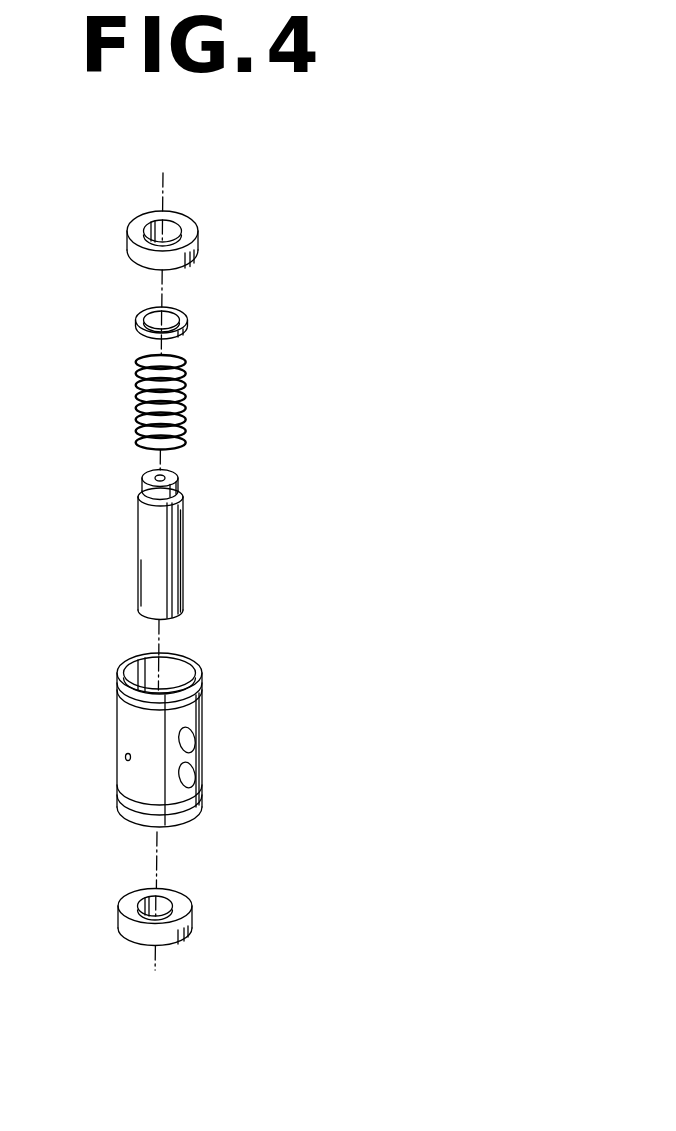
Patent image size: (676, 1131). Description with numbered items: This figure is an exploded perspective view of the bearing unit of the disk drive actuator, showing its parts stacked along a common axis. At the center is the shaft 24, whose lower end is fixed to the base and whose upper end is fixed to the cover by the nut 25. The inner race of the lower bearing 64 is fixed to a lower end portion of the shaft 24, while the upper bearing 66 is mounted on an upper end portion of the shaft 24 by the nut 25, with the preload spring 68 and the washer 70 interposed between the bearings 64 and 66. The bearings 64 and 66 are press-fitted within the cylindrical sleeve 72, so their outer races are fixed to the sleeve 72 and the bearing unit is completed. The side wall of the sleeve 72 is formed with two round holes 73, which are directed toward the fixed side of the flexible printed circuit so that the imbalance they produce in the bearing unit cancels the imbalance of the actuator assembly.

The bearing 66 is at (199, 243).
The washer 70 is at (189, 322).
The preload spring 68 is at (188, 405).
The nut 25 is at (178, 472).
The shaft 24 is at (183, 545).
The cylindrical sleeve 72 is at (128, 735).
The round holes 73 is at (197, 740).
The bearing 64 is at (192, 918).